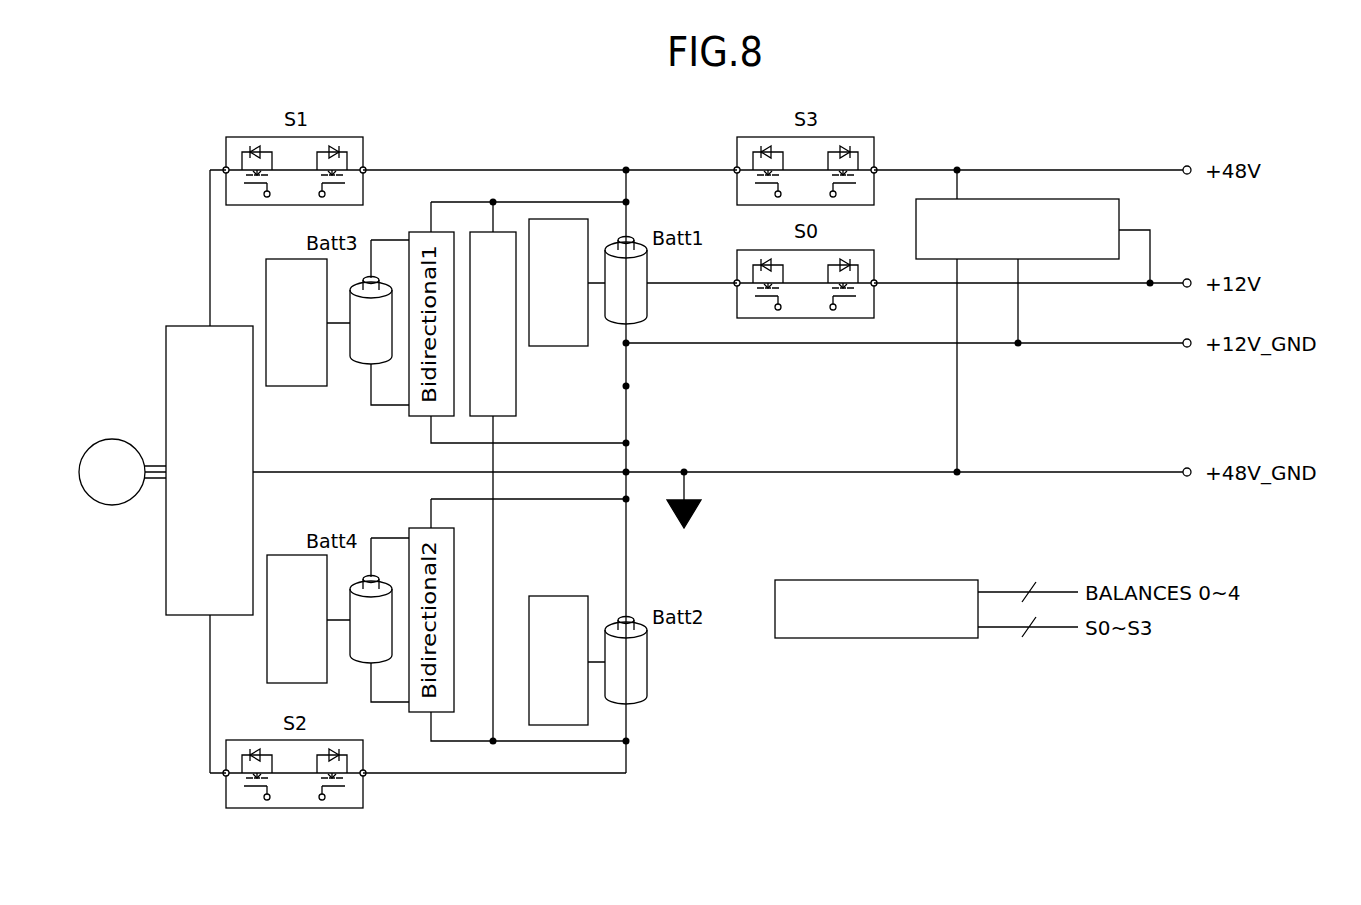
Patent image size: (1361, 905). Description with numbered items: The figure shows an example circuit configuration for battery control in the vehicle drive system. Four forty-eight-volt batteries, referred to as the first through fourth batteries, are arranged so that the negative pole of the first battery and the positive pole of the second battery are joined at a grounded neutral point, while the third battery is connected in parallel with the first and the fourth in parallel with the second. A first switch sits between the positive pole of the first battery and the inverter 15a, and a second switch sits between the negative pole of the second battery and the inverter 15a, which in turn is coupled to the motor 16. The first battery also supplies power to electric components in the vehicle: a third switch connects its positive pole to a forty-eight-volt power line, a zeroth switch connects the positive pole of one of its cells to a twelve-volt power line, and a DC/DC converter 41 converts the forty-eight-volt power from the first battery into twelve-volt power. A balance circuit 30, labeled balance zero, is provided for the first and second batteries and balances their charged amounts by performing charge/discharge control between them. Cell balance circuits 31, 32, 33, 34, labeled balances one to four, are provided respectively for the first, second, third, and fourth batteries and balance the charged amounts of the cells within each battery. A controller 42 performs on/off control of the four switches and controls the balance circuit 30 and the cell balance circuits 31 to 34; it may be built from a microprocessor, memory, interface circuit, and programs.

The inverter 15a is at (180, 324).
The motor 16 is at (112, 438).
The balance circuit 30 is at (516, 408).
The cell balance circuit 31 is at (541, 348).
The cell balance circuit 32 is at (556, 596).
The cell balance circuit 33 is at (292, 390).
The cell balance circuit 34 is at (294, 686).
The DC/DC converter 41 is at (1119, 215).
The controller 42 is at (808, 580).